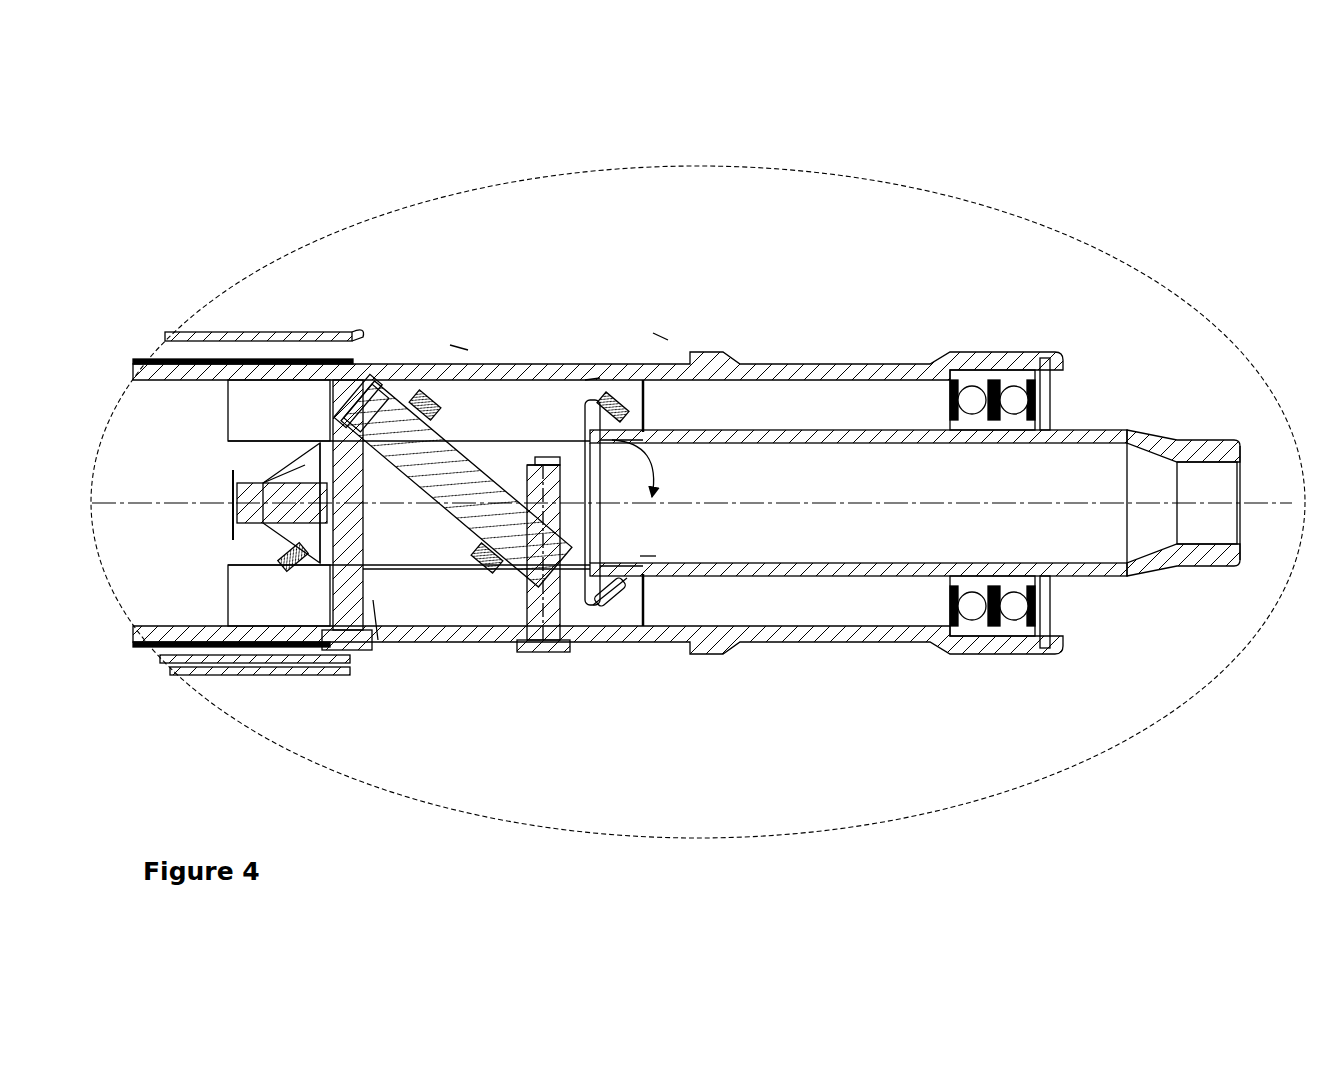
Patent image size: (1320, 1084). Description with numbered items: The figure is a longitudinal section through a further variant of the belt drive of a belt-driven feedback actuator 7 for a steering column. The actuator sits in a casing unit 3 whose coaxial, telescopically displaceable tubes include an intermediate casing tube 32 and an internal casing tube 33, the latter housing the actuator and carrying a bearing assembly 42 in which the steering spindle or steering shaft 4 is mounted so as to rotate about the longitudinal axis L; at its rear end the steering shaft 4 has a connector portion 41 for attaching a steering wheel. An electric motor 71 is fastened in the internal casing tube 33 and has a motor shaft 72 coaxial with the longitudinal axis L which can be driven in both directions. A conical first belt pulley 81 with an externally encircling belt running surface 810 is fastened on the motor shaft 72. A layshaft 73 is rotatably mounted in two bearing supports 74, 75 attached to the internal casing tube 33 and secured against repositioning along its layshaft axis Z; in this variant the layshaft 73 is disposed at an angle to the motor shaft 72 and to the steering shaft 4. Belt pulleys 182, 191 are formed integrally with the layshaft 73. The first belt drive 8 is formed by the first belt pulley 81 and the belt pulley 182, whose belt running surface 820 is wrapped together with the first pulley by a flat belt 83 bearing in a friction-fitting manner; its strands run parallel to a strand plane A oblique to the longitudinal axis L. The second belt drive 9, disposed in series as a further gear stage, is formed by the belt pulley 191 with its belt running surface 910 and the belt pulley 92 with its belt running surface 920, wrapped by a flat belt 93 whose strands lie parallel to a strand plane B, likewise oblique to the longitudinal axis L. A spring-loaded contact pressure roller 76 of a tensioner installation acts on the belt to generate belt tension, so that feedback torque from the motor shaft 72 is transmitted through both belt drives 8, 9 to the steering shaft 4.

The casing unit 3 is at (320, 329).
The intermediate casing tube 32 is at (292, 383).
The internal casing tube 33 is at (596, 372).
The steering spindle 4 is at (1112, 432).
The connector portion 41 is at (1200, 452).
The bearing assembly 42 is at (1016, 402).
The feedback actuator 7 is at (502, 470).
The electric motor 71 is at (150, 640).
The motor shaft 72 is at (186, 650).
The layshaft 73 is at (450, 530).
The bearing support 74 is at (345, 648).
The bearing support 75 is at (541, 652).
The contact pressure roller 76 is at (660, 352).
The first belt drive 8 is at (357, 333).
The first belt pulley 81 is at (298, 443).
The belt running surface 810 is at (298, 468).
The belt running surface 820 is at (408, 410).
The belt 83 is at (300, 572).
The second belt drive 9 is at (542, 393).
The belt running surface 910 is at (492, 440).
The belt pulley 92 is at (598, 606).
The belt running surface 920 is at (616, 606).
The belt 93 is at (494, 572).
The belt pulley 182 is at (370, 400).
The belt pulley 191 is at (548, 465).
The strand plane A is at (480, 410).
The strand plane B is at (600, 378).
The longitudinal axis L is at (1283, 496).
The layshaft axis Z is at (556, 632).